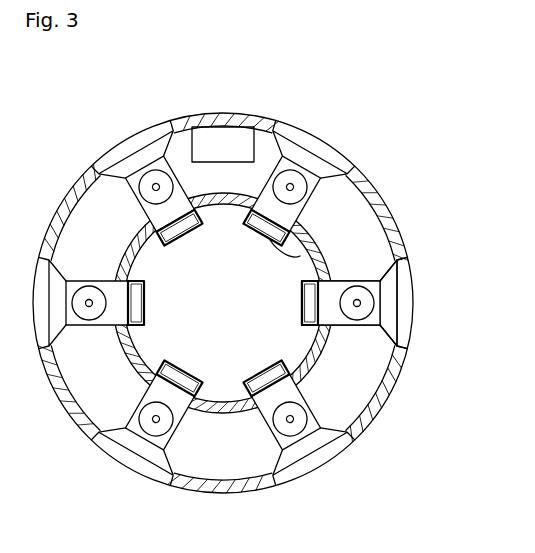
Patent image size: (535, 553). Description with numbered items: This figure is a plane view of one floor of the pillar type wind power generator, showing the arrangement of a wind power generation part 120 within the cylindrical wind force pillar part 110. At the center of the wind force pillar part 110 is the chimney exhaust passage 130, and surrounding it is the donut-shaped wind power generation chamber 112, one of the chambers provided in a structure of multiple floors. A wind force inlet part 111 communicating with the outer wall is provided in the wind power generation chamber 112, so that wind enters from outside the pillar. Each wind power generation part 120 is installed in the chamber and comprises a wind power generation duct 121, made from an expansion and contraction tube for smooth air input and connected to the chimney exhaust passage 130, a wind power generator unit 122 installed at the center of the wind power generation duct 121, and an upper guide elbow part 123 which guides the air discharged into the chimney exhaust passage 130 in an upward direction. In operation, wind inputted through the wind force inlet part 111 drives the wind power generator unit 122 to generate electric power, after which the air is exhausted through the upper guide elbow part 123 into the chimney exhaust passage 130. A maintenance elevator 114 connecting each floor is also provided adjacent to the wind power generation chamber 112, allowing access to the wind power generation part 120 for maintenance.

The wind force pillar part 110 is at (398, 207).
The wind force inlet part 111 is at (309, 127).
The wind power generation chamber 112 is at (375, 255).
The maintenance elevator 114 is at (219, 126).
The wind power generation part 120 is at (358, 162).
The wind power generation duct 121 is at (300, 256).
The wind power generator unit 122 is at (306, 206).
The upper guide elbow part 123 is at (320, 236).
The chimney exhaust passage 130 is at (318, 281).